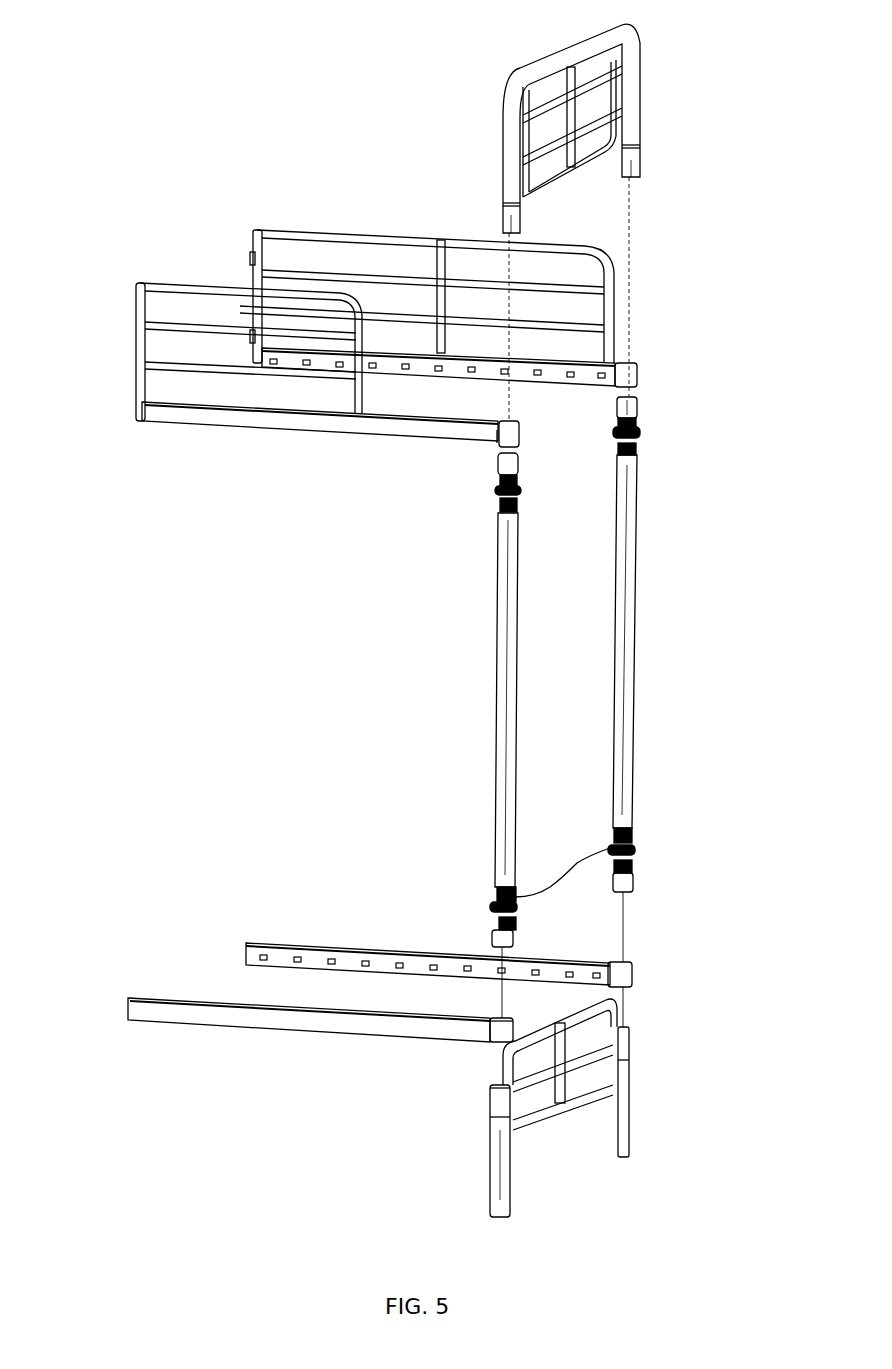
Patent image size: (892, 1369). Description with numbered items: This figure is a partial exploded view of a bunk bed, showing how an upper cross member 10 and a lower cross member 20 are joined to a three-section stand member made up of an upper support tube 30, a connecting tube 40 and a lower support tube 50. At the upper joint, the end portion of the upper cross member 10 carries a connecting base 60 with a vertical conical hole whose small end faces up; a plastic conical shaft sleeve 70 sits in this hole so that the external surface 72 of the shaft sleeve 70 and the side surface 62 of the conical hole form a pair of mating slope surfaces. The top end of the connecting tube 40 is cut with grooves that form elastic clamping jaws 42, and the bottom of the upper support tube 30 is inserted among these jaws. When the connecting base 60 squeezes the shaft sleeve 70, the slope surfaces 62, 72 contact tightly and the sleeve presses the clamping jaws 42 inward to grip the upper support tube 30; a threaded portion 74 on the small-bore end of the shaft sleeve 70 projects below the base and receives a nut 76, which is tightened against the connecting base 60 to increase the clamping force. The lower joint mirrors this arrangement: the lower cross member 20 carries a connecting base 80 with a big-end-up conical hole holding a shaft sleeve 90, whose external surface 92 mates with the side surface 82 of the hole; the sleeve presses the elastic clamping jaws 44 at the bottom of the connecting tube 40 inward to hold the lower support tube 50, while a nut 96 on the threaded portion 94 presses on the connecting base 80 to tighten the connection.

The upper cross member 10 is at (308, 423).
The lower cross member 20 is at (293, 1025).
The upper support tube 30 is at (518, 218).
The connecting tube 40 is at (518, 748).
The elastic clamping jaws 42 is at (517, 507).
The elastic clamping jaws 44 is at (635, 850).
The lower support tube 50 is at (507, 1190).
The connecting base 60 is at (637, 448).
The side surface of the conical hole 62 is at (518, 422).
The shaft sleeve 70 is at (517, 474).
The external surface of the shaft sleeve 72 is at (515, 467).
The threaded portion 74 is at (495, 480).
The nut 76 is at (496, 492).
The connecting base 80 is at (513, 1028).
The side surface of the conical hole 82 is at (508, 1017).
The shaft sleeve 90 is at (508, 942).
The external surface of the shaft sleeve 92 is at (515, 930).
The threaded portion 94 is at (493, 923).
The nut 96 is at (490, 907).